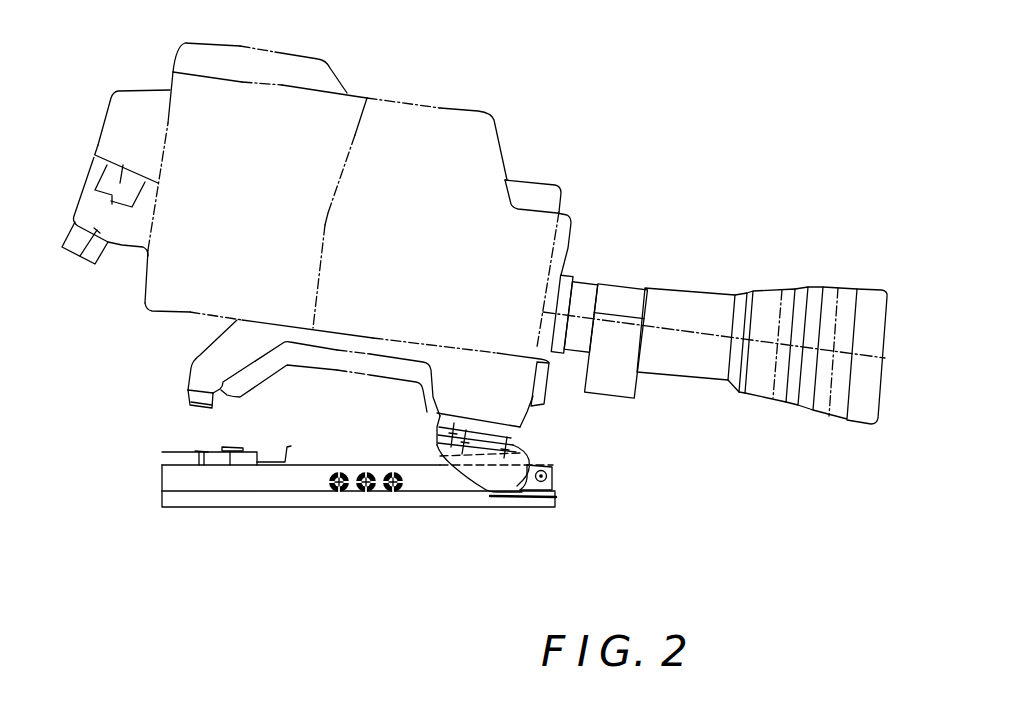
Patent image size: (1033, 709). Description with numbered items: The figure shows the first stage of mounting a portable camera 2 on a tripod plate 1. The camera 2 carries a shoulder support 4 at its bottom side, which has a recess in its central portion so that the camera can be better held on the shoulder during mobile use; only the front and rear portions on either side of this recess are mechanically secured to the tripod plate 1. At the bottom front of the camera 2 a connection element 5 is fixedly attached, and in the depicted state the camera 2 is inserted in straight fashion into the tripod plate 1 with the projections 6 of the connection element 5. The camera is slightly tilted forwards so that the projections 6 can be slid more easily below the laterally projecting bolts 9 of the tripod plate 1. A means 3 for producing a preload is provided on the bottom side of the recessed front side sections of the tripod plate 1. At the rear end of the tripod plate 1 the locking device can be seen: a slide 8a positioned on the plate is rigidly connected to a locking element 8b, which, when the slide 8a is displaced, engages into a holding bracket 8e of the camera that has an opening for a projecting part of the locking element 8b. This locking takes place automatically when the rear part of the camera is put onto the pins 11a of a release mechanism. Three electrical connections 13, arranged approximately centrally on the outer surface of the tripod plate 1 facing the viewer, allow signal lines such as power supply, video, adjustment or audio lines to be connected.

The tripod plate 1 is at (205, 482).
The portable camera 2 is at (479, 137).
The means for producing a preload 3 is at (555, 497).
The shoulder support 4 is at (220, 350).
The connection element 5 is at (510, 475).
The projections 6 is at (522, 484).
The slide 8a is at (291, 447).
The locking element 8b is at (238, 446).
The holding bracket 8e is at (200, 406).
The laterally projecting bolts 9 is at (547, 476).
The pins of a release mechanism 11a is at (200, 452).
The electrical connections 13 is at (340, 492).